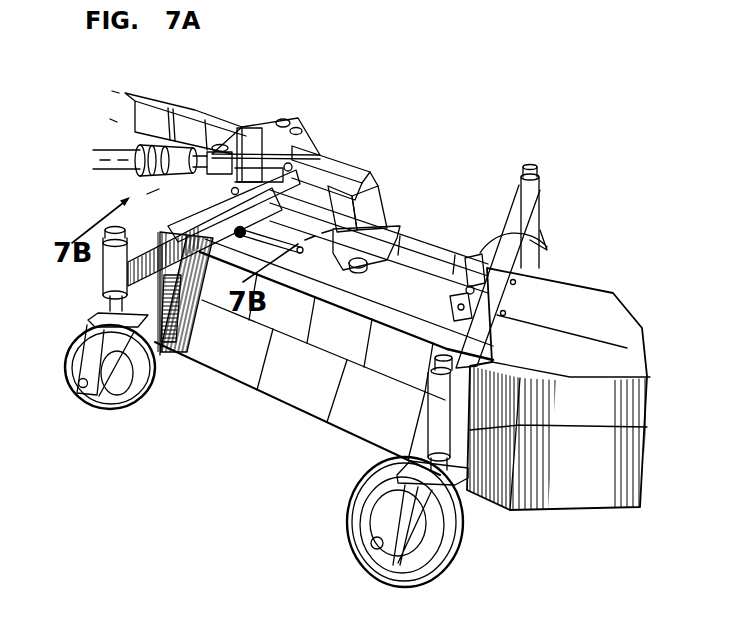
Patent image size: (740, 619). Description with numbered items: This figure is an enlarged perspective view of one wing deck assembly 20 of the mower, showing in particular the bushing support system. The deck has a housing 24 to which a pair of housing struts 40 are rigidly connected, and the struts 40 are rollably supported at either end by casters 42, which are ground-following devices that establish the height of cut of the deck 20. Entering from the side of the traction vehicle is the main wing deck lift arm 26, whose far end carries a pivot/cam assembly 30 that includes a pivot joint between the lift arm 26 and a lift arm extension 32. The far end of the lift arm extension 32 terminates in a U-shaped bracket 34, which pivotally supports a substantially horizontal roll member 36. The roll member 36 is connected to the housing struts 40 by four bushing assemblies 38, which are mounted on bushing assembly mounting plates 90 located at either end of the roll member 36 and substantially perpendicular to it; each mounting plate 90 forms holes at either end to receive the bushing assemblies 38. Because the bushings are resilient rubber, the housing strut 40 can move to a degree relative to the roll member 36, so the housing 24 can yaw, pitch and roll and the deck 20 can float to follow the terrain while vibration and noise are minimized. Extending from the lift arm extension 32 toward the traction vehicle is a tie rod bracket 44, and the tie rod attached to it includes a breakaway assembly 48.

The wing deck assembly 20 is at (565, 512).
The housing 24 is at (597, 468).
The main wing deck lift arm 26 is at (218, 122).
The pivot/cam assembly 30 is at (298, 86).
The lift arm extension 32 is at (347, 170).
The U-shaped bracket 34 is at (396, 203).
The roll member 36 is at (425, 258).
The bushing assembly 38 is at (278, 254).
The housing strut 40 is at (162, 235).
The caster 42 is at (457, 554).
The tie rod bracket 44 is at (309, 143).
The breakaway assembly 48 is at (124, 185).
The bushing assembly mounting plate 90 is at (231, 190).